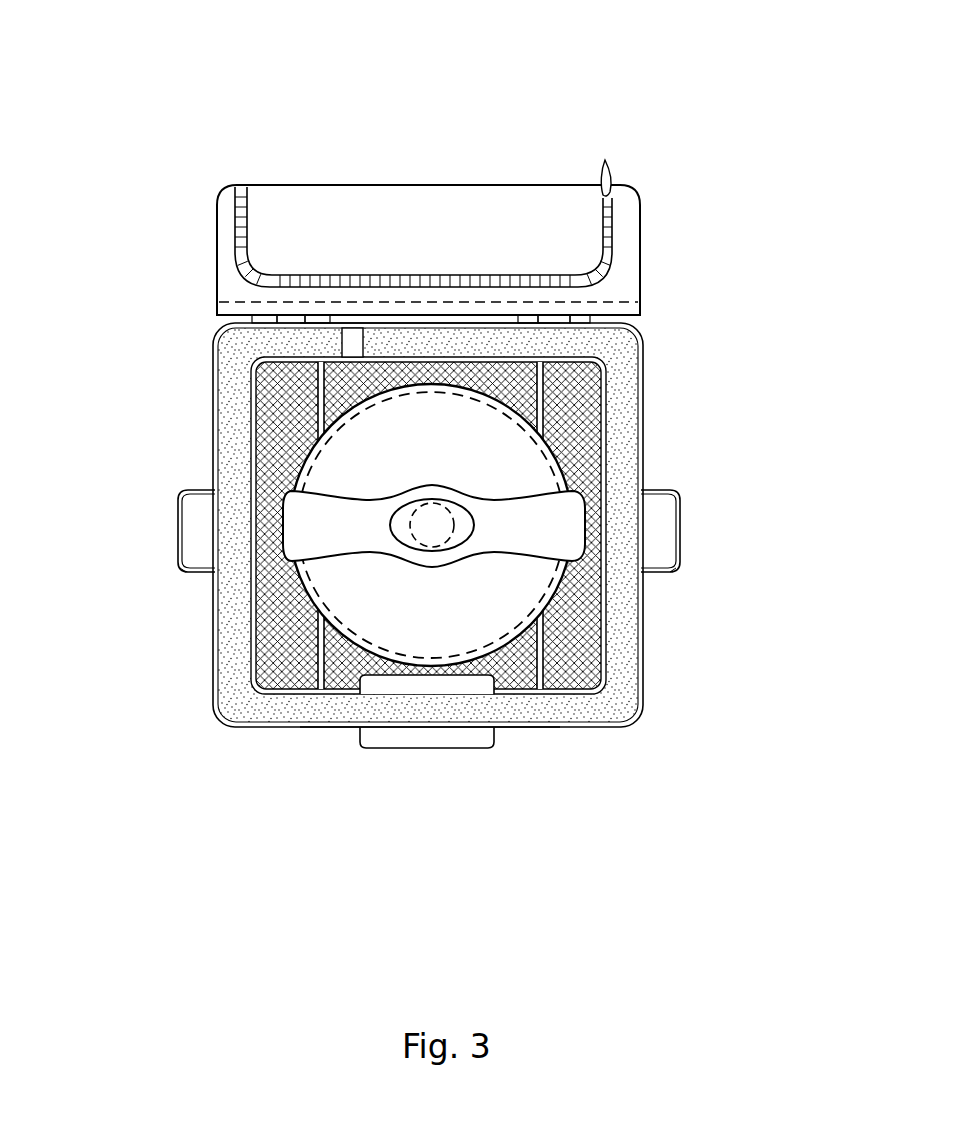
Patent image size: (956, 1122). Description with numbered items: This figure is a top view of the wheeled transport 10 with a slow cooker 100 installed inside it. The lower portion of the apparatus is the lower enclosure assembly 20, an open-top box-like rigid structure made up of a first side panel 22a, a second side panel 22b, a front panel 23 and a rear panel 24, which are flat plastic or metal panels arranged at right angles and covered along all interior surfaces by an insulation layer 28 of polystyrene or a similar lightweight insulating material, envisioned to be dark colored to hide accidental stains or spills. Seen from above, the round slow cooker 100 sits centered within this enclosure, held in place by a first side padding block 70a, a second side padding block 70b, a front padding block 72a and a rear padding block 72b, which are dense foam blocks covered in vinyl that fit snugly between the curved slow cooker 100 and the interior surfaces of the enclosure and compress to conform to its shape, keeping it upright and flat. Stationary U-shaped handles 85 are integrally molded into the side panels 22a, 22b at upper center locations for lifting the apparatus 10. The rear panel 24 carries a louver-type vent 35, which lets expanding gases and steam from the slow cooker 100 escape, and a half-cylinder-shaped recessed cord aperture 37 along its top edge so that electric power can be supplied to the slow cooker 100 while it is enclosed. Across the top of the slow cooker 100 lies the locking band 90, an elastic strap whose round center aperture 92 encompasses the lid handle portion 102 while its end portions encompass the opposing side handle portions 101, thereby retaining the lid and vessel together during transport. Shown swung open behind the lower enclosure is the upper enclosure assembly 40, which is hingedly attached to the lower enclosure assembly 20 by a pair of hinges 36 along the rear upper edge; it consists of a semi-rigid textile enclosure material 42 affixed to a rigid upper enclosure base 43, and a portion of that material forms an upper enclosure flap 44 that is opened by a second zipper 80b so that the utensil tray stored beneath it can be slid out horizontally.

The wheeled transport 10 is at (755, 114).
The lower enclosure assembly 20 is at (654, 542).
The first side panel 22a is at (220, 508).
The second side panel 22b is at (644, 448).
The front panel 23 is at (400, 327).
The rear panel 24 is at (302, 728).
The insulation layer 28 is at (613, 708).
The louver-type vent 35 is at (423, 748).
The hinges 36 is at (270, 320).
The recessed cord aperture 37 is at (349, 333).
The upper enclosure assembly 40 is at (411, 180).
The enclosure material 42 is at (642, 198).
The upper enclosure base 43 is at (641, 307).
The upper enclosure flap 44 is at (316, 211).
The first side padding block 70a is at (258, 418).
The second side padding block 70b is at (601, 417).
The front padding block 72a is at (592, 370).
The rear padding block 72b is at (503, 673).
The second zipper 80b is at (604, 163).
The U-shaped handles 85 is at (178, 568).
The locking band 90 is at (576, 547).
The center aperture 92 is at (392, 512).
The slow cooker 100 is at (319, 613).
The side handle portions 101 is at (286, 536).
The lid handle portion 102 is at (413, 538).